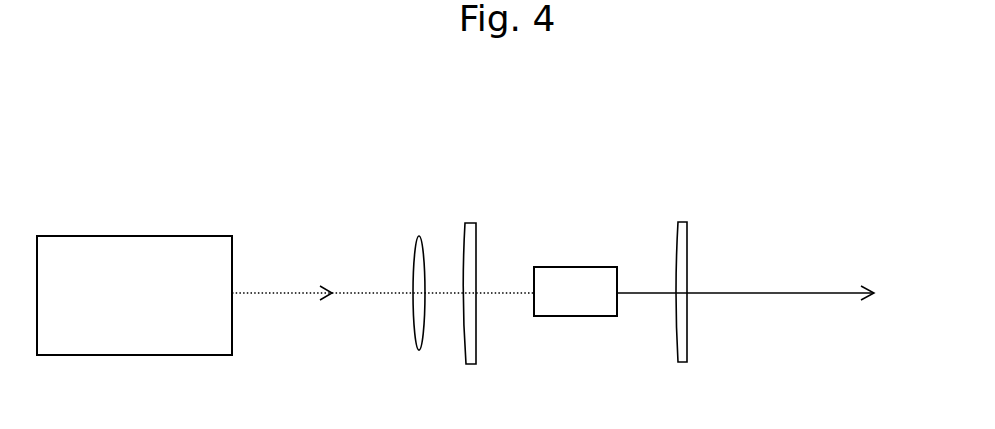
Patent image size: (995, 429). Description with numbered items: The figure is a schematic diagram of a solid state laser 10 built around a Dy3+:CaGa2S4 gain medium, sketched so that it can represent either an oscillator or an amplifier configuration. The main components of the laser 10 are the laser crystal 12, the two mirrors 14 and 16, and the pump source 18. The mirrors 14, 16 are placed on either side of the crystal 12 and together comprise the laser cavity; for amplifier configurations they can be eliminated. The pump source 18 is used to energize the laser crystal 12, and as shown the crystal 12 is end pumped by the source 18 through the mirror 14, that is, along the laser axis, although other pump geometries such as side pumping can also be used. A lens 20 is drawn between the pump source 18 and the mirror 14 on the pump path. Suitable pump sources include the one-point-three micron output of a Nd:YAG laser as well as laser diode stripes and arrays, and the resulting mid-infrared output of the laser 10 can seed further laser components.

The laser 10 is at (766, 292).
The laser crystal 12 is at (575, 308).
The mirror 14 is at (472, 311).
The mirror 16 is at (682, 309).
The pump source 18 is at (141, 310).
The focusing lens 20 is at (419, 312).